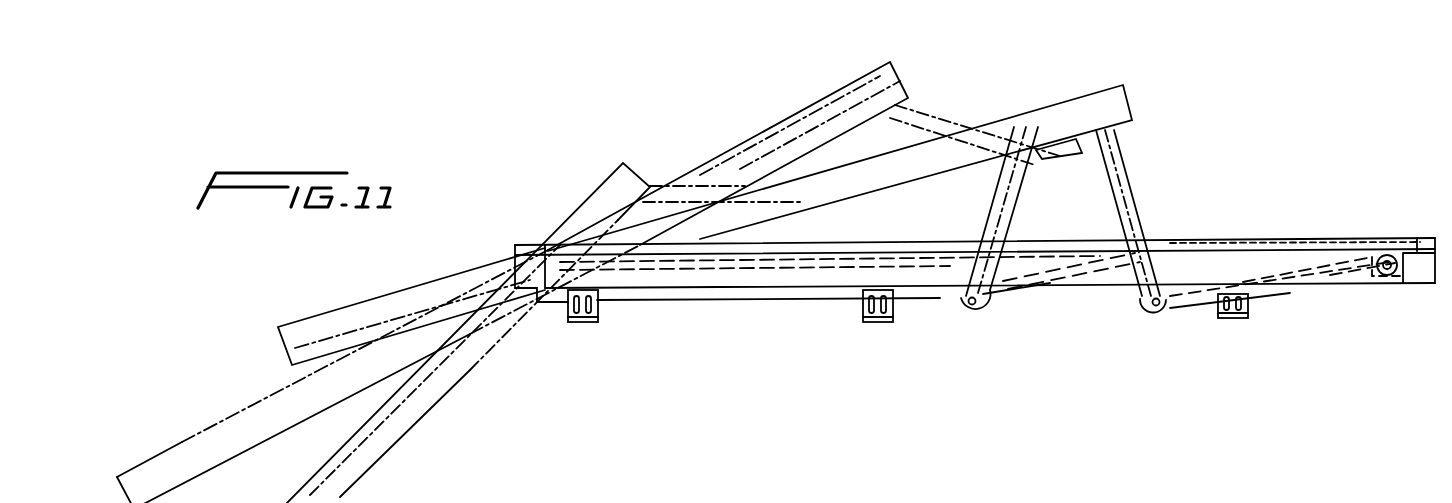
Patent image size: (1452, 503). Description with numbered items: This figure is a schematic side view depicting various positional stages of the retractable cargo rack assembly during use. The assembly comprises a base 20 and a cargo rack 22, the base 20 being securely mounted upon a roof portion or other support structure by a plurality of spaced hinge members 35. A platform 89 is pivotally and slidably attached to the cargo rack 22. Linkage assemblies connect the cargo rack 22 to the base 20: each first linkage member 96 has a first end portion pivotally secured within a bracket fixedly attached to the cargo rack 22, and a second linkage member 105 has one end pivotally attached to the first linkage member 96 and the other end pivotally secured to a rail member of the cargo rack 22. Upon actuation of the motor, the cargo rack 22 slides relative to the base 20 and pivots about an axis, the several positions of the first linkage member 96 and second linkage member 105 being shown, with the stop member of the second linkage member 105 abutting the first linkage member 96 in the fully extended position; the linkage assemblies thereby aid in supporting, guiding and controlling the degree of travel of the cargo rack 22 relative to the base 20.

The base 20 is at (725, 296).
The cargo rack 22 is at (1268, 258).
The hinge member 35 is at (883, 322).
The platform 89 is at (1222, 242).
The first linkage member 96 is at (697, 187).
The second linkage member 105 is at (903, 268).